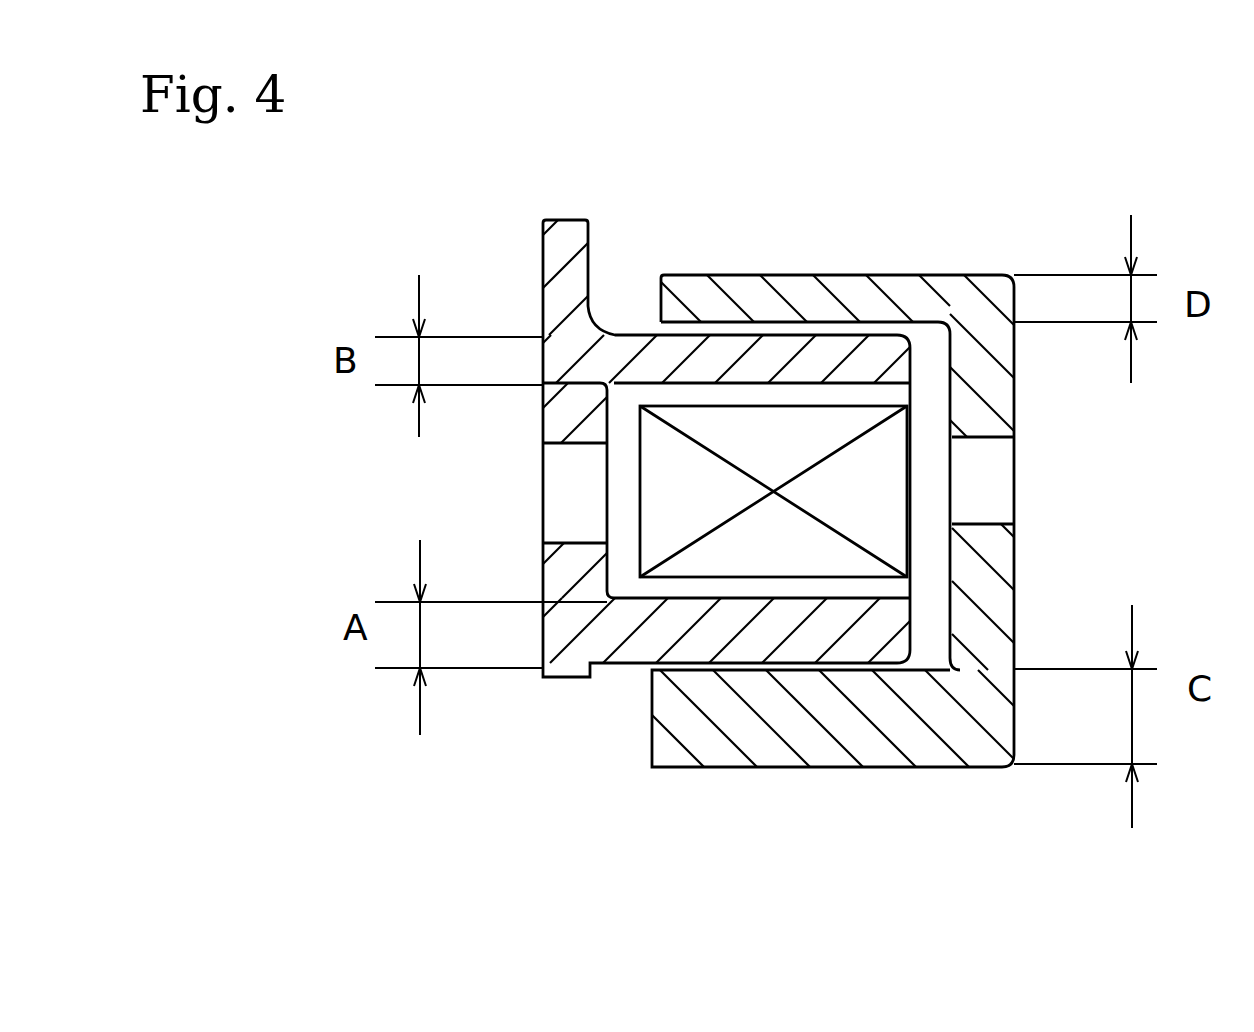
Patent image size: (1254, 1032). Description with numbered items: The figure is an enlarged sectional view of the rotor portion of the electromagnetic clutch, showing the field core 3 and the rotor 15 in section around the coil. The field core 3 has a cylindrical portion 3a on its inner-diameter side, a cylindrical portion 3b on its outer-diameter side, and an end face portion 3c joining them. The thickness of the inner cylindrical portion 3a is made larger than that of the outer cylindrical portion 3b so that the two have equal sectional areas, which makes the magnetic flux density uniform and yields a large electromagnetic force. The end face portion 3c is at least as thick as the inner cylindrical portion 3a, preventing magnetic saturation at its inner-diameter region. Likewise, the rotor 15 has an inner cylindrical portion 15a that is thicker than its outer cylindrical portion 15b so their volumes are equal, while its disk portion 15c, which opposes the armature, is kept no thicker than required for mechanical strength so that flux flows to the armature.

The field core 3 is at (538, 293).
The cylindrical portion on the inner-diameter side of the field core 3a is at (706, 640).
The cylindrical portion on the outer-diameter side of the field core 3b is at (699, 363).
The end face portion 3c is at (568, 573).
The rotor 15 is at (908, 266).
The cylindrical portion on the inner-diameter side of the rotor 15a is at (860, 698).
The cylindrical portion on the outer-diameter side of the rotor 15b is at (801, 308).
The disk portion 15c is at (980, 573).